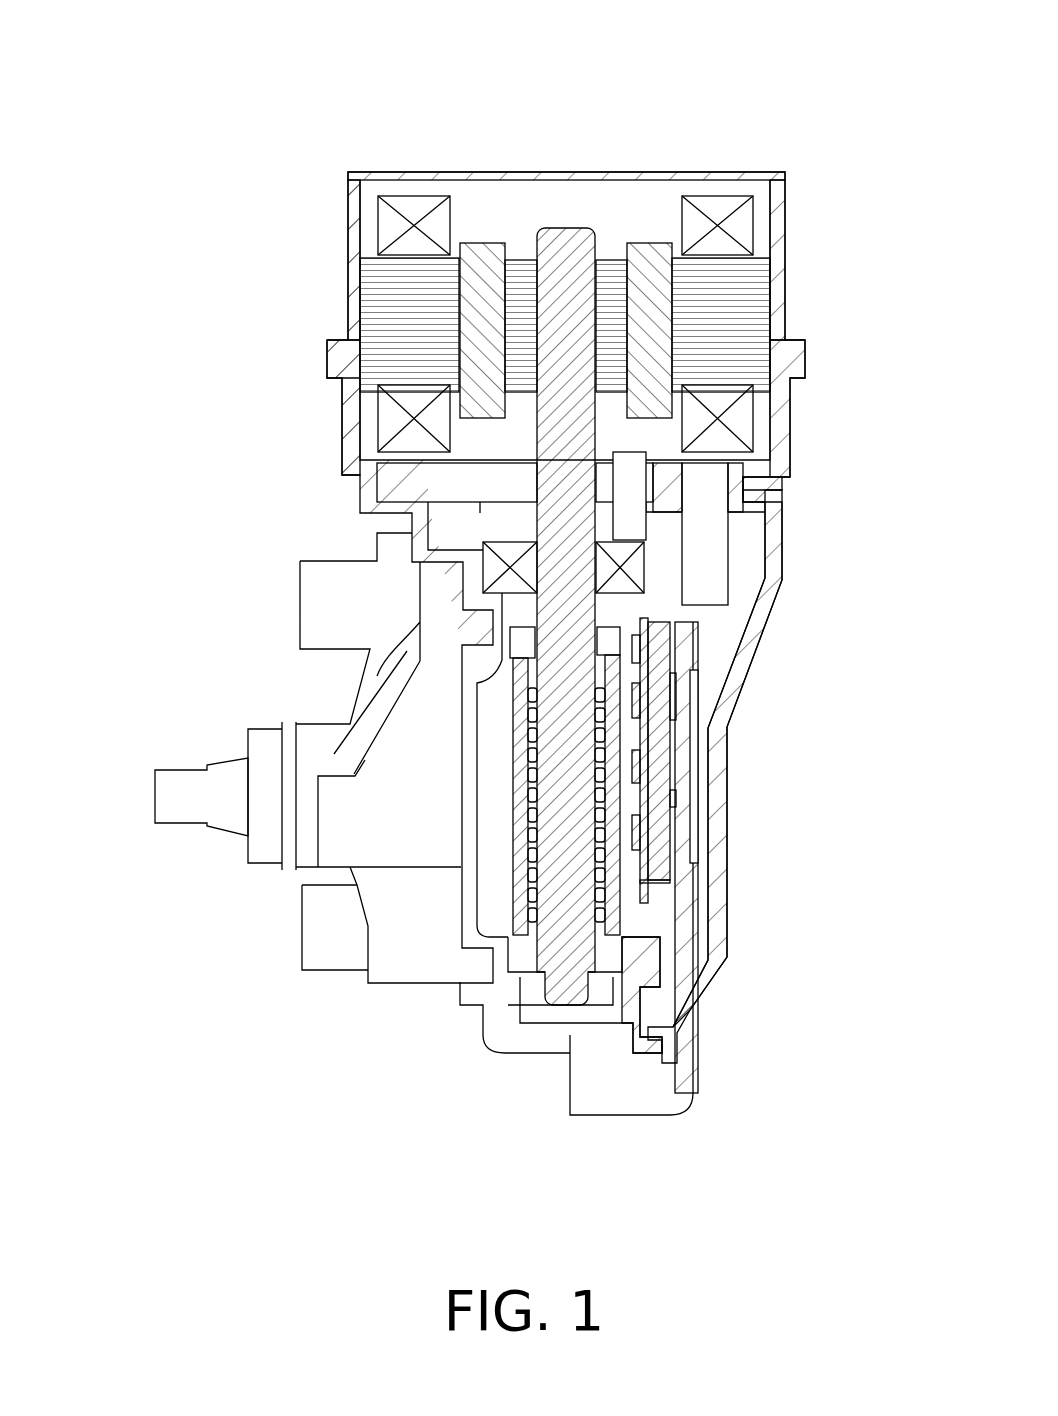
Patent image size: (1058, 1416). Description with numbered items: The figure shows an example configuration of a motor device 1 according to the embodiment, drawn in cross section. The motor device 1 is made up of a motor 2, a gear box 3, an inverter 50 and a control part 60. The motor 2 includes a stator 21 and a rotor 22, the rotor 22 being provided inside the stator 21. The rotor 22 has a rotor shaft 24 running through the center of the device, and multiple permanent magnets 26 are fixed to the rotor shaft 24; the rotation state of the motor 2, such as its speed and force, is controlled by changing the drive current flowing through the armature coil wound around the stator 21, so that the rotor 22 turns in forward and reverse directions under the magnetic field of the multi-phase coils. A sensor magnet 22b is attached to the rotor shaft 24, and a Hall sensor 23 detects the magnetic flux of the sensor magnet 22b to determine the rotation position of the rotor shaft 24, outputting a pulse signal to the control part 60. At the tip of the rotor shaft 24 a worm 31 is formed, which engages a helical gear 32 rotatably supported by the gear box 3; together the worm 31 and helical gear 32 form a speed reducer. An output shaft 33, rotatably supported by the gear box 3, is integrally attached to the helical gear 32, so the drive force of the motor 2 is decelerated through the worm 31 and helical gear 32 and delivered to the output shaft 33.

The motor device 1 is at (488, 557).
The motor 2 is at (578, 606).
The gear box 3 is at (259, 818).
The stator 21 is at (318, 455).
The rotor 22 is at (462, 157).
The sensor magnet 22b is at (608, 643).
The Hall sensor 23 is at (648, 675).
The rotor shaft 24 is at (560, 240).
The permanent magnets 26 is at (460, 356).
The worm 31 is at (585, 841).
The helical gear 32 is at (600, 892).
The output shaft 33 is at (148, 798).
The inverter 50 is at (658, 747).
The control part 60 is at (650, 895).